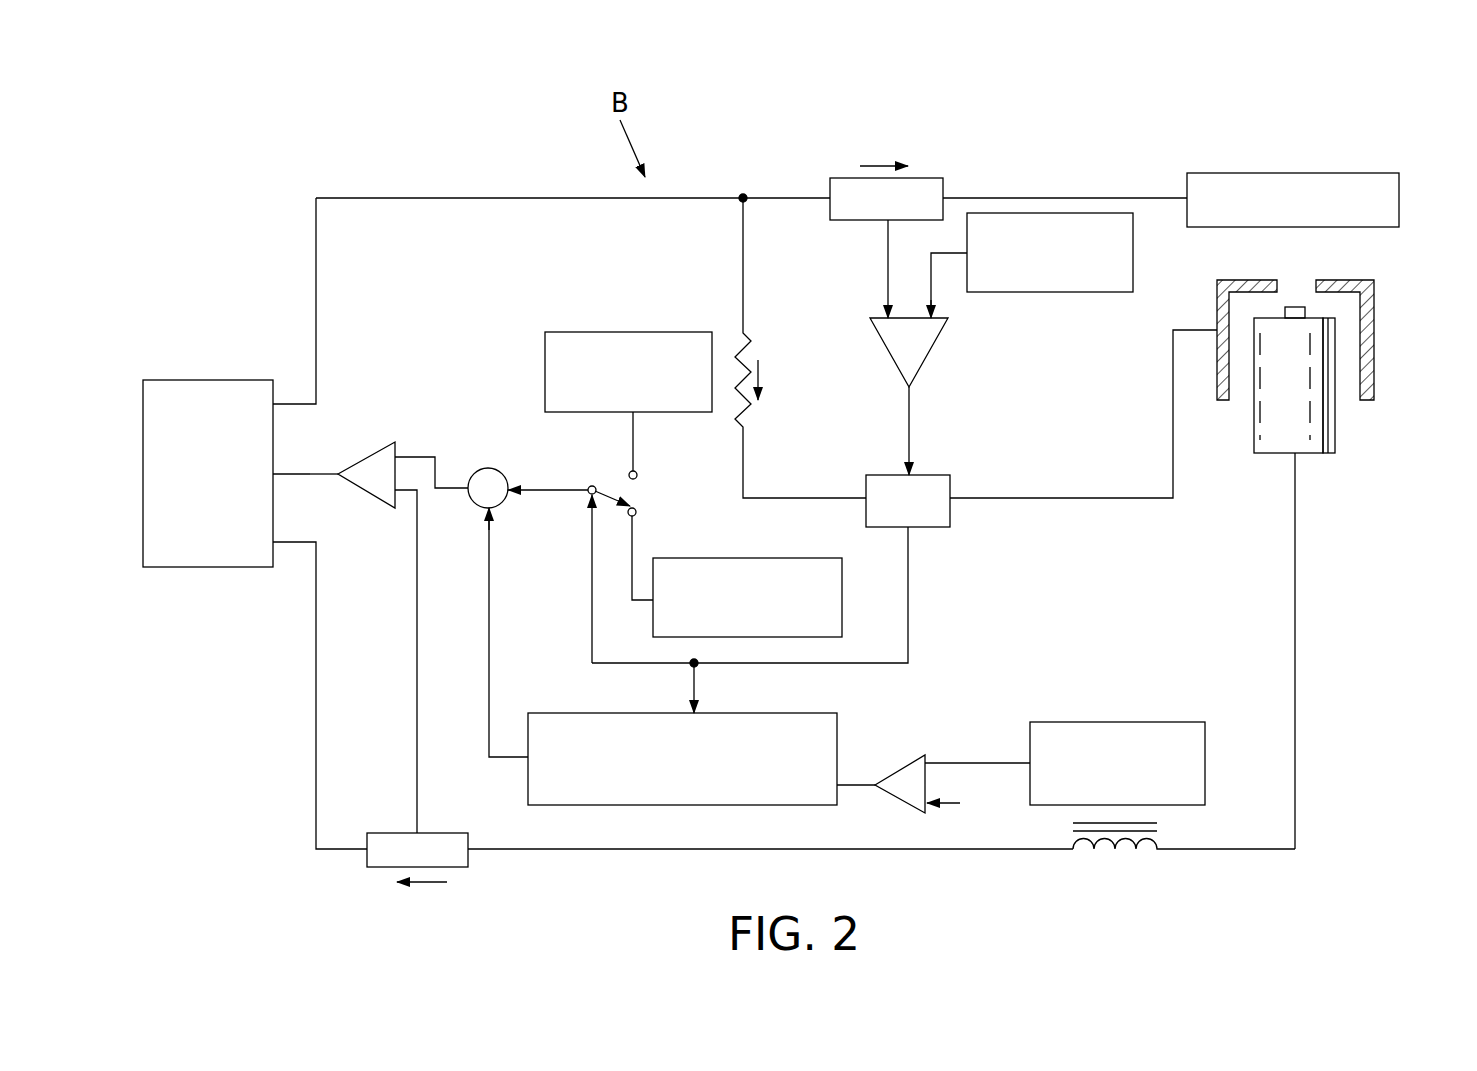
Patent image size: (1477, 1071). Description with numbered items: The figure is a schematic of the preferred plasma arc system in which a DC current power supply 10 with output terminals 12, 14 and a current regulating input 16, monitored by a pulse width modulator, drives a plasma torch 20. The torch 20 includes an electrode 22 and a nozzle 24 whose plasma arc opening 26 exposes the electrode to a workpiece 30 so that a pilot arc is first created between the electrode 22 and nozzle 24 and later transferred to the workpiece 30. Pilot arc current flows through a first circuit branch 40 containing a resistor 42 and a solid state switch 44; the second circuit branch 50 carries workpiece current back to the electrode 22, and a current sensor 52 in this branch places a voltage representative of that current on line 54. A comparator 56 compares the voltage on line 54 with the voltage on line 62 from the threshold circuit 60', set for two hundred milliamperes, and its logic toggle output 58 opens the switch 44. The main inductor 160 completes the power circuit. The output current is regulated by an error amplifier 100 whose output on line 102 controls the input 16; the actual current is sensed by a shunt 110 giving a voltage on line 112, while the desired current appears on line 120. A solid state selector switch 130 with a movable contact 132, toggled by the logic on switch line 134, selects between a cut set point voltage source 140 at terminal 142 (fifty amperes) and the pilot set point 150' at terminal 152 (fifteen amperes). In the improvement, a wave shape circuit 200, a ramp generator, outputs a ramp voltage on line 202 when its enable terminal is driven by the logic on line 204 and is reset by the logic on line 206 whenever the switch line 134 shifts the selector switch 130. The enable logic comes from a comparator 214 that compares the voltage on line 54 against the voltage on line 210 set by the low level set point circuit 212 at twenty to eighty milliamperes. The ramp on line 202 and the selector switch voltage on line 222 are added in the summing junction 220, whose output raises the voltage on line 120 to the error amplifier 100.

The DC current power supply 10 is at (211, 387).
The output terminal 12 is at (286, 402).
The output terminal 14 is at (288, 543).
The current regulating input 16 is at (293, 477).
The plasma torch 20 is at (1339, 536).
The electrode 22 is at (1337, 428).
The nozzle 24 is at (1377, 325).
The nozzle orifice 26 is at (1295, 288).
The workpiece 30 is at (1372, 173).
The first circuit branch 40 is at (1078, 500).
The resistor 42 is at (748, 342).
The solid state switch 44 is at (933, 475).
The second circuit branch 50 is at (1017, 197).
The current sensor 52 is at (933, 177).
The output line 54 is at (888, 262).
The comparator 56 is at (930, 353).
The logic toggle output 58 is at (908, 420).
The threshold circuit 60' is at (1050, 293).
The output line 62 is at (932, 282).
The error amplifier 100 is at (378, 500).
The output line 102 is at (323, 473).
The shunt 110 is at (393, 833).
The line 112 is at (417, 653).
The line 120 is at (423, 447).
The solid state selector switch 130 is at (631, 464).
The movable contact 132 is at (618, 494).
The switch line 134 is at (590, 587).
The cut set point voltage source 140 is at (618, 332).
The terminal 142 is at (640, 468).
The pilot set point 150' is at (747, 574).
The terminal 152 is at (636, 514).
The main inductor 160 is at (1125, 858).
The wave shape circuit 200 is at (805, 713).
The line 202 is at (490, 675).
The line 204 is at (860, 786).
The line 206 is at (693, 682).
The line 210 is at (975, 763).
The low level set point circuit 212 is at (1113, 722).
The comparator 214 is at (910, 758).
The summing junction 220 is at (483, 467).
The line 222 is at (543, 493).